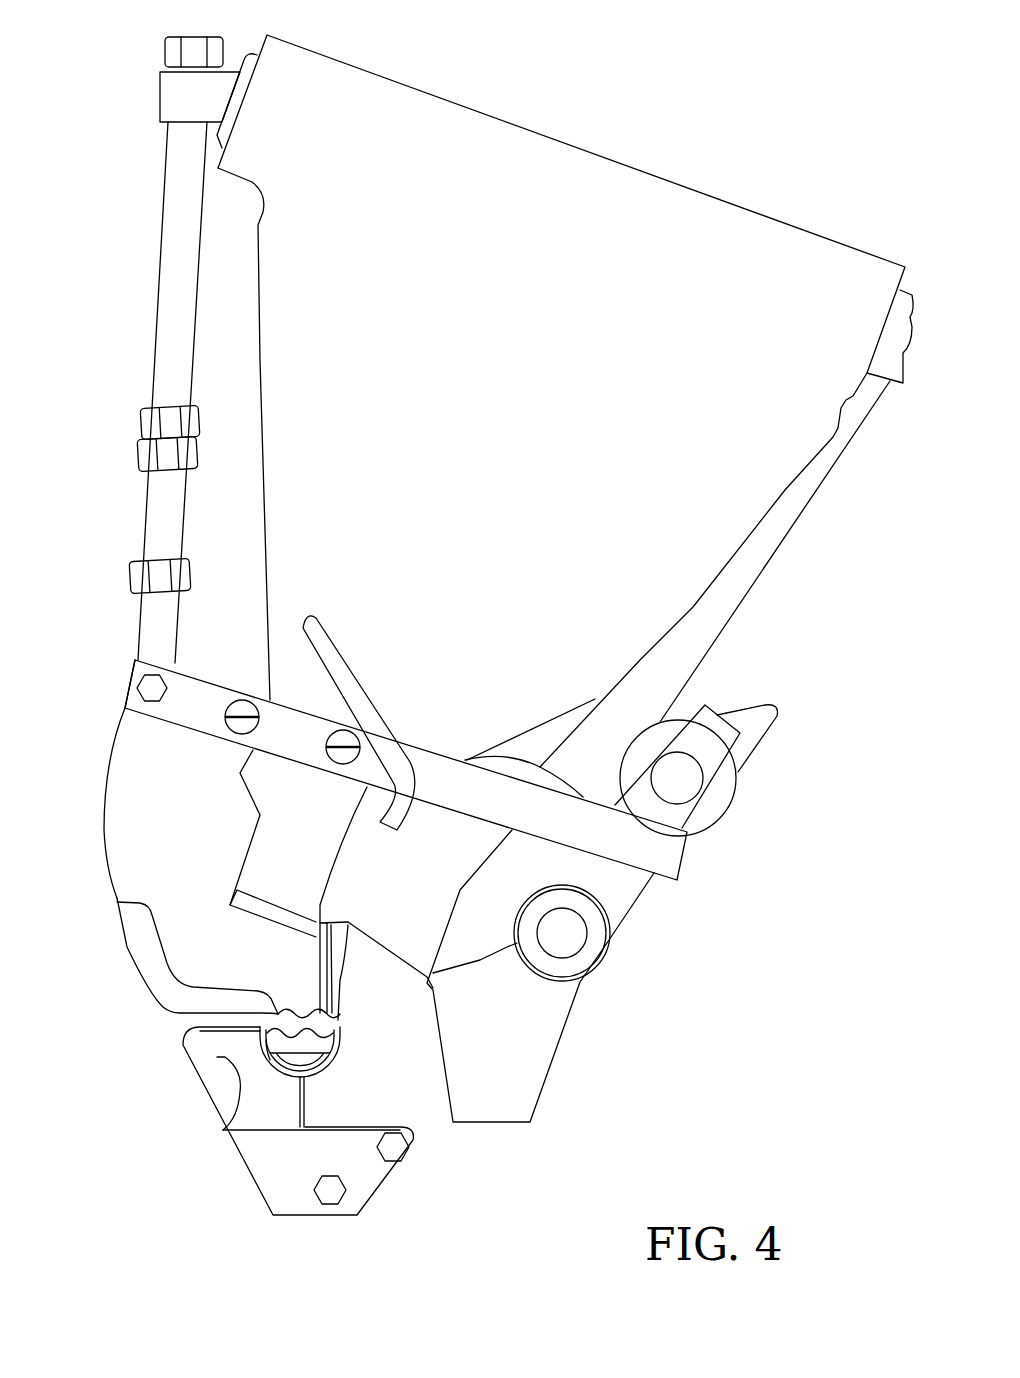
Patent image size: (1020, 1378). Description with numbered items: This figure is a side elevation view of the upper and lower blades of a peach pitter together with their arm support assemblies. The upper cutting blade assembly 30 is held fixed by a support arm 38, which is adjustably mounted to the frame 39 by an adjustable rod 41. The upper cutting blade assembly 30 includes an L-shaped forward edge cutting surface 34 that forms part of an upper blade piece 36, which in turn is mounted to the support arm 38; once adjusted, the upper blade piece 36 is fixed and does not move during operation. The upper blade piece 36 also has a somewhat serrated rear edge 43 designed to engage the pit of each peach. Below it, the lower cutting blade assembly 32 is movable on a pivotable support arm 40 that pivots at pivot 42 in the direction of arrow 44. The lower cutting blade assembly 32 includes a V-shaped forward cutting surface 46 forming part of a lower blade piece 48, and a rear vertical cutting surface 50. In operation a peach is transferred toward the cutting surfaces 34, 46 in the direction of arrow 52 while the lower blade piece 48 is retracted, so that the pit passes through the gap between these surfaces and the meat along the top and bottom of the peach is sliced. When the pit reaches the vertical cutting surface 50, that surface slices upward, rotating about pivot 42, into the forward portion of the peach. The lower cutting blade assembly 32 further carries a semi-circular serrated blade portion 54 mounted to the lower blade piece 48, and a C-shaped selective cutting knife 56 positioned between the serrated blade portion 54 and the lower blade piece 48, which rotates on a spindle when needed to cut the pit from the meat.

The upper cutting blade assembly 30 is at (90, 756).
The lower cutting blade assembly 32 is at (205, 1141).
The L-shaped forward edge cutting surface 34 is at (135, 948).
The upper blade piece 36 is at (195, 845).
The support arm 38 is at (690, 858).
The frame 39 is at (477, 435).
The pivotable support arm 40 is at (557, 1025).
The adjustable rod 41 is at (158, 245).
The pivot 42 is at (577, 938).
The serrated rear edge 43 is at (345, 1022).
The arrow 44 is at (503, 1205).
The V-shaped forward cutting surface 46 is at (200, 1077).
The lower blade piece 48 is at (396, 1109).
The rear vertical cutting surface 50 is at (320, 955).
The arrow 52 is at (145, 1026).
The semi-circular serrated blade portion 54 is at (318, 1047).
The C-shaped selective cutting knife 56 is at (284, 1072).